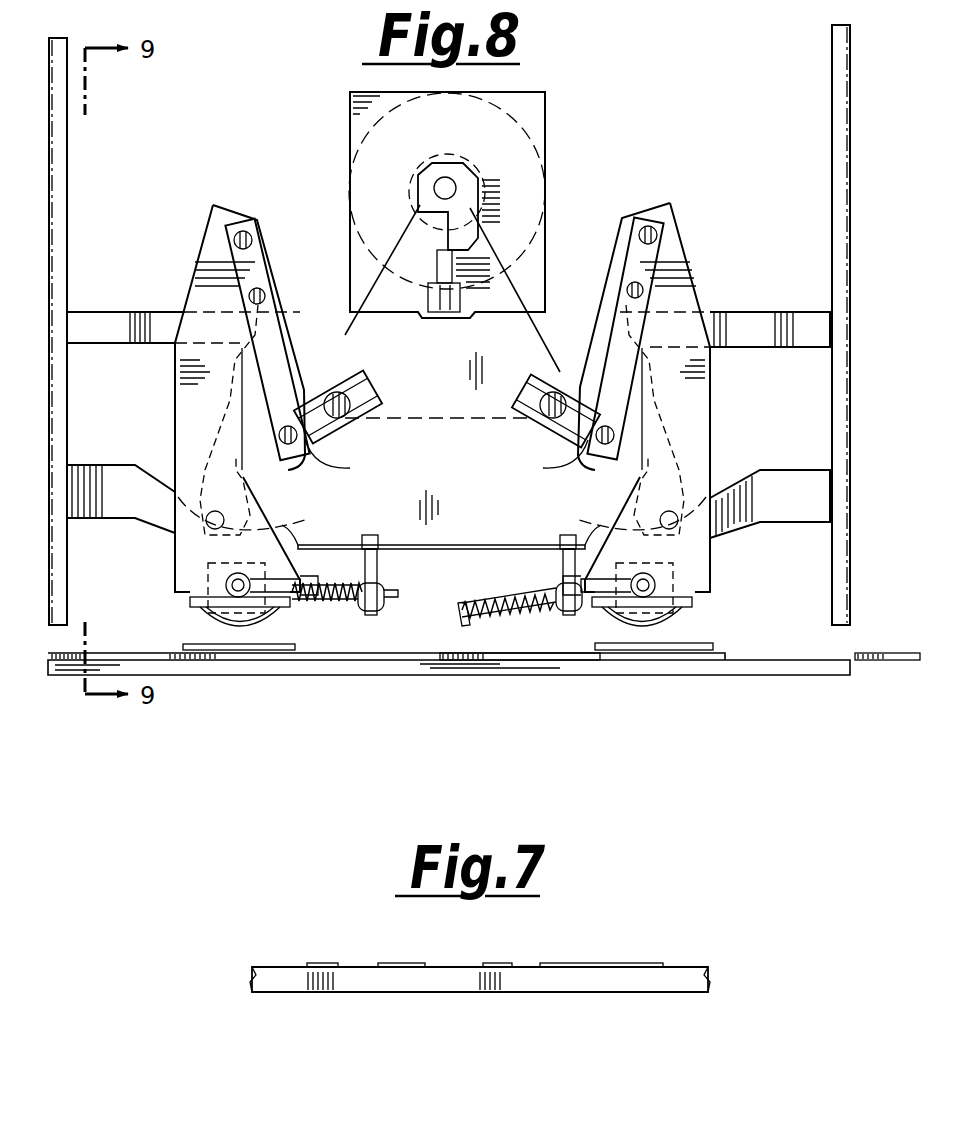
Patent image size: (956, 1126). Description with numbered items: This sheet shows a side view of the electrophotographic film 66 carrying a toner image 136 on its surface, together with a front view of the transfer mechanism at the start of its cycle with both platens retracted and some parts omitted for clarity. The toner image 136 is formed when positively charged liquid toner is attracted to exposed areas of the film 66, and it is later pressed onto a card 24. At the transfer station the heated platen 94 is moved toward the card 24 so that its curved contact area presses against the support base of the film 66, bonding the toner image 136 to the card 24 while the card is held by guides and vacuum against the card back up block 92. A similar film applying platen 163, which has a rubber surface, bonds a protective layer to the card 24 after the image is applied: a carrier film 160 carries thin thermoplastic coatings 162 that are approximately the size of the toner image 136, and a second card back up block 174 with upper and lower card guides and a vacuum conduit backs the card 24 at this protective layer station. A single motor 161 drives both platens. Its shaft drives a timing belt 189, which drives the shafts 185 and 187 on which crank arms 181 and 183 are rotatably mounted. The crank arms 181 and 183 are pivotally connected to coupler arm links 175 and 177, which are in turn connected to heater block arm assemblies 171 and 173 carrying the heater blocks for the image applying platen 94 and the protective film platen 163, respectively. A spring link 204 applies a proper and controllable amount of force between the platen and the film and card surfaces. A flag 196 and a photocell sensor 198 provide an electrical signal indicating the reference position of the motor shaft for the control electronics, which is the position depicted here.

In FIG. 8, the motor 161 is at (545, 100).
In FIG. 8, the timing belt 189 is at (478, 200).
In FIG. 8, the flag 196 is at (440, 205).
In FIG. 8, the photocell sensor 198 is at (437, 262).
In FIG. 8, the coupler arm link 177 is at (262, 257).
In FIG. 8, the coupler arm link 175 is at (608, 328).
In FIG. 8, the spring link 204 is at (177, 433).
In FIG. 8, the shaft 187 is at (355, 386).
In FIG. 8, the shaft 185 is at (536, 380).
In FIG. 8, the crank arm 183 is at (340, 448).
In FIG. 8, the crank arm 181 is at (555, 448).
In FIG. 8, the heater block arm assembly 171 is at (712, 438).
In FIG. 8, the heater block arm assembly 173 is at (175, 555).
In FIG. 8, the film applying platen 163 is at (190, 624).
In FIG. 8, the heated platen 94 is at (703, 600).
In FIG. 8, the card 24 is at (515, 656).
In FIG. 8, the carrier film 160 is at (290, 637).
In FIG. 8, the thermoplastic coating 162 is at (298, 652).
In FIG. 8, the card back up block 174 is at (248, 677).
In FIG. 8, the electrophotographic film 66 is at (700, 655).
In FIG. 7, the electrophotographic film 66 is at (702, 975).
In FIG. 8, the card back up block 92 is at (687, 676).
In FIG. 7, the toner image 136 is at (606, 962).